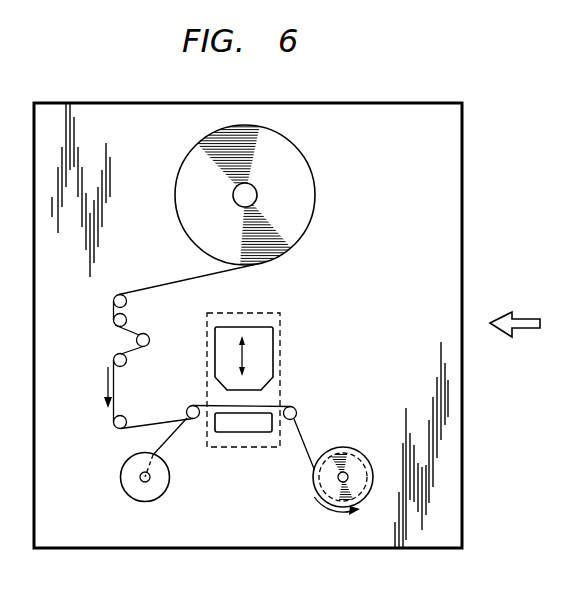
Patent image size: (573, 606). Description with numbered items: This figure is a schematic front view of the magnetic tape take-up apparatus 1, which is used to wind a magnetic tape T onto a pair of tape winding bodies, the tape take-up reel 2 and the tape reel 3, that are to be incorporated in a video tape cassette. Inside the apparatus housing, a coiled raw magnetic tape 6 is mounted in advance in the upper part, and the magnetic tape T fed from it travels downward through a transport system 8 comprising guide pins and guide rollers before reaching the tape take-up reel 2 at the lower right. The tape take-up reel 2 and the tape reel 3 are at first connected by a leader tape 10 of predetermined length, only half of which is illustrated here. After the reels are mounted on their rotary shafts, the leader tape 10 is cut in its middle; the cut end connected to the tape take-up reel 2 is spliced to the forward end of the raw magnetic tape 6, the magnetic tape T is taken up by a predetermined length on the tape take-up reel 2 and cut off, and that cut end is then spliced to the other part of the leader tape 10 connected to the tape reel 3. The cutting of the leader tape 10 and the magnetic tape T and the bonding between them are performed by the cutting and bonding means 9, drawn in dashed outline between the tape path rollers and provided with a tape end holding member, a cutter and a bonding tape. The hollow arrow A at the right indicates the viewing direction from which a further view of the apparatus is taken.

The take-up apparatus 1 is at (470, 191).
The tape take-up reel 2 is at (354, 450).
The tape reel 3 is at (120, 478).
The coiled raw magnetic tape 6 is at (317, 185).
The transport system 8 is at (99, 305).
The cutting and bonding means 9 is at (281, 337).
The leader tape 10 is at (176, 432).
The magnetic tape T is at (165, 287).
The arrow A is at (524, 326).